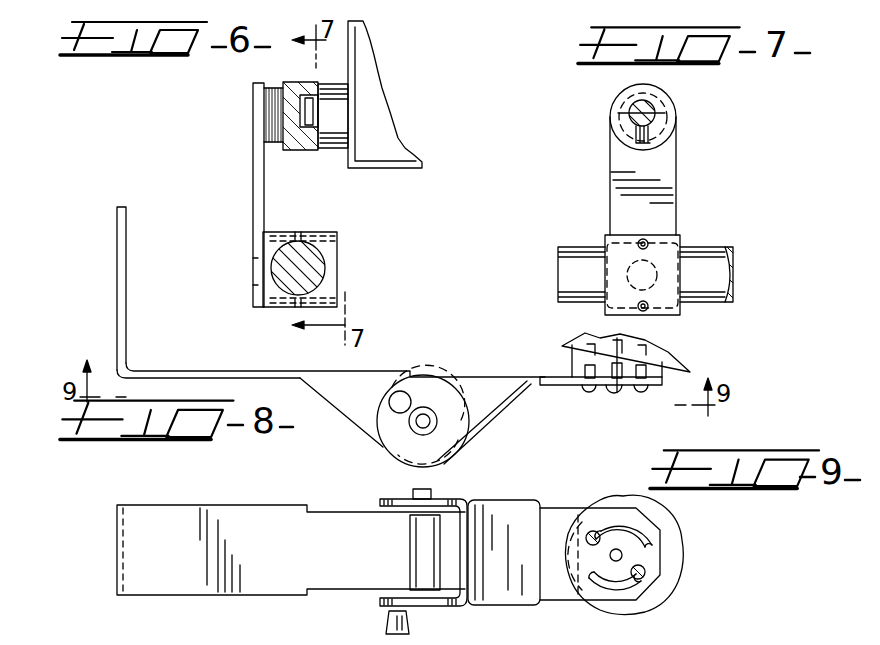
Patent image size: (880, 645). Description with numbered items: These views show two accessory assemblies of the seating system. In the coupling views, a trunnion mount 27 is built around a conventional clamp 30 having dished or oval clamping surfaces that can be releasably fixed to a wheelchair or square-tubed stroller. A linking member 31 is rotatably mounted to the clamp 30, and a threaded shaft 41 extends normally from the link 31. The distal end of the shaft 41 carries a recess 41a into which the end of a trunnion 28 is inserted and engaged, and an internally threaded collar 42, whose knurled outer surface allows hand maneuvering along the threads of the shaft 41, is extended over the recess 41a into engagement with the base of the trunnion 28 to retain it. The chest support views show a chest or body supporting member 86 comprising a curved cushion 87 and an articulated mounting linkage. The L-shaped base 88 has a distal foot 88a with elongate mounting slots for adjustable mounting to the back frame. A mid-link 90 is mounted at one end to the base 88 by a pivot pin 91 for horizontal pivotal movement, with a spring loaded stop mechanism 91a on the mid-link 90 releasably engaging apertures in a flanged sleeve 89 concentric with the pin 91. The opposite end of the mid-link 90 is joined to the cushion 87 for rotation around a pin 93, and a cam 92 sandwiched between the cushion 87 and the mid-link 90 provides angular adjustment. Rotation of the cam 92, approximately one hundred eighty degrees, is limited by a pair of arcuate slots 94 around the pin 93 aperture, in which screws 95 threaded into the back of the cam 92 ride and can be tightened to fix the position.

In FIG. 6, the trunnion mount 27 is at (233, 173).
In FIG. 7, the trunnion mount 27 is at (718, 193).
In FIG. 6, the trunnion 28 is at (340, 100).
In FIG. 6, the clamp 30 is at (325, 256).
In FIG. 7, the clamp 30 is at (676, 248).
In FIG. 6, the linking member 31 is at (264, 188).
In FIG. 7, the linking member 31 is at (612, 192).
In FIG. 6, the threaded shaft 41 is at (270, 90).
In FIG. 6, the recess 41a is at (305, 95).
In FIG. 6, the internally threaded collar 42 is at (306, 150).
In FIG. 8, the chest or body supporting member 86 is at (300, 390).
In FIG. 9, the chest or body supporting member 86 is at (556, 494).
In FIG. 8, the curved cushion 87 is at (660, 352).
In FIG. 9, the curved cushion 87 is at (672, 527).
In FIG. 8, the L-shaped base 88 is at (227, 371).
In FIG. 8, the distal foot 88a is at (126, 276).
In FIG. 9, the flanged sleeve 89 is at (452, 604).
In FIG. 8, the mid-link 90 is at (540, 376).
In FIG. 9, the pivot pin 91 is at (423, 530).
In FIG. 9, the spring loaded stop mechanism 91a is at (386, 622).
In FIG. 8, the cam 92 is at (665, 373).
In FIG. 8, the pin 93 is at (617, 392).
In FIG. 9, the pin 93 is at (625, 555).
In FIG. 9, the arcuate slots 94 is at (613, 525).
In FIG. 9, the screws 95 is at (600, 540).